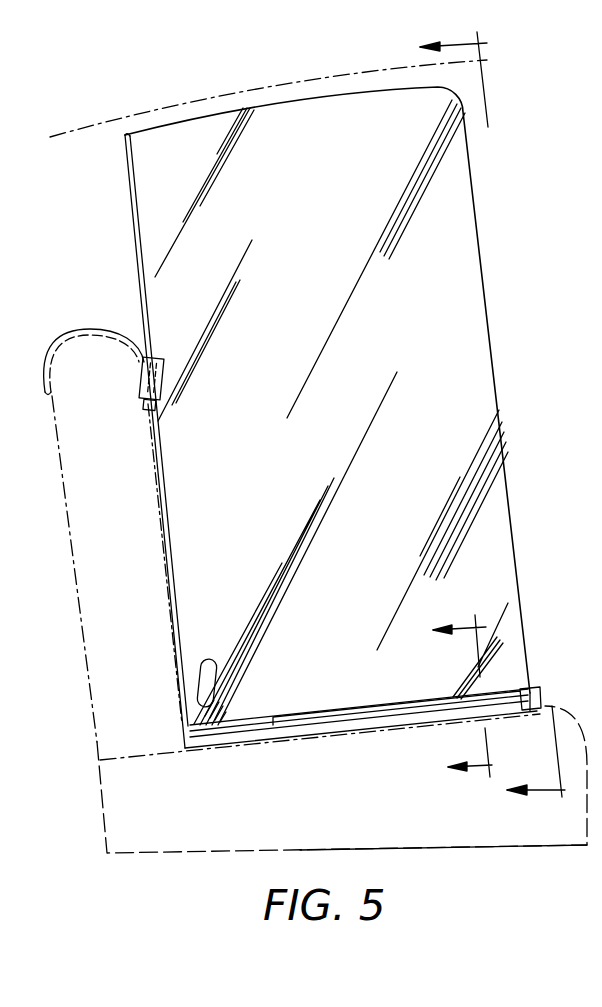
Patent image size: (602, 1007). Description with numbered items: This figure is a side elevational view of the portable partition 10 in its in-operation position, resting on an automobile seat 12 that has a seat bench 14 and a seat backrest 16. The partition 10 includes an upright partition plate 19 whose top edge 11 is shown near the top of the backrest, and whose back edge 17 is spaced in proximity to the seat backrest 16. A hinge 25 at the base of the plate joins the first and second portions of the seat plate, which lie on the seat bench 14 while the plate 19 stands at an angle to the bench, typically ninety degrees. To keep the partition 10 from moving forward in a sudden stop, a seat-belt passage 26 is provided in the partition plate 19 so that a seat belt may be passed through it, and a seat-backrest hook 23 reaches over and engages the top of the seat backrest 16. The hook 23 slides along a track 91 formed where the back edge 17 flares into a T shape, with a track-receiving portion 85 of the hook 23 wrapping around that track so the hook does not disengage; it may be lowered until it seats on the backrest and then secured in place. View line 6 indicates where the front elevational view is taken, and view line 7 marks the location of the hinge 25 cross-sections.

The portable partition 10 is at (497, 181).
The top edge 11 is at (252, 110).
The automobile seat 12 is at (80, 713).
The seat bench 14 is at (477, 850).
The seat backrest 16 is at (85, 657).
The back edge 17 is at (133, 217).
The partition plate 19 is at (303, 226).
The seat-backrest hook 23 is at (72, 333).
The hinge 25 is at (537, 693).
The seat-belt passage 26 is at (207, 697).
The track-receiving portion 85 is at (163, 373).
The track 91 is at (167, 450).
The view line 6— 6 is at (478, 423).
The view line 7— 7 is at (450, 704).